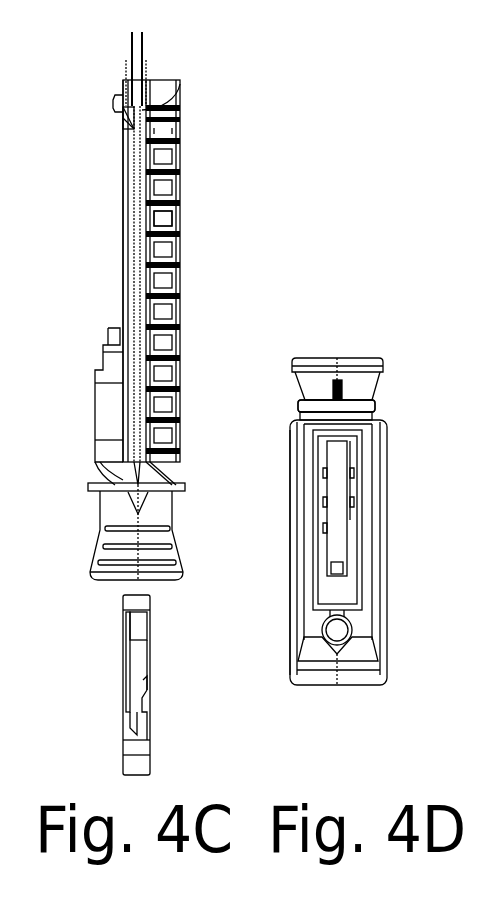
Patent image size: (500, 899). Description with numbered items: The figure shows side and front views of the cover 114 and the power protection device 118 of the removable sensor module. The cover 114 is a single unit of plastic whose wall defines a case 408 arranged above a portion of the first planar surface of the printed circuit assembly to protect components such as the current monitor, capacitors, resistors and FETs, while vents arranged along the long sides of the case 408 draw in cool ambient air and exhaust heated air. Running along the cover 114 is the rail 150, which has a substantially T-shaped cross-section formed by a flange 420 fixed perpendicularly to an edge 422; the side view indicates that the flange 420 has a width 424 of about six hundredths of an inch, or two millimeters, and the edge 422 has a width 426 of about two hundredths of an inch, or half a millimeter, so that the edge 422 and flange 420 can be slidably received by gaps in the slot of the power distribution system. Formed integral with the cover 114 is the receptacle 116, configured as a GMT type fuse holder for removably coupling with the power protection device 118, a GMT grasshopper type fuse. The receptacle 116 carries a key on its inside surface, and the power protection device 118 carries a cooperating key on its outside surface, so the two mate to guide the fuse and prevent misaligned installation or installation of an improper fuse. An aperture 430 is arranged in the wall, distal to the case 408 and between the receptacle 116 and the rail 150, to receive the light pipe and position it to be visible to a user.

In FIG. 4C, the cover 114 is at (197, 288).
In FIG. 4D, the cover 114 is at (382, 350).
In FIG. 4D, the receptacle 116 is at (380, 428).
In FIG. 4C, the power protection device 118 is at (108, 742).
In FIG. 4D, the power protection device 118 is at (340, 557).
In FIG. 4C, the rail 150 is at (125, 228).
In FIG. 4D, the rail 150 is at (334, 688).
In FIG. 4D, the case 408 is at (290, 410).
In FIG. 4C, the flange 420 is at (139, 166).
In FIG. 4C, the edge 422 is at (136, 128).
In FIG. 4C, the width 424 is at (180, 72).
In FIG. 4C, the width 426 is at (98, 45).
In FIG. 4D, the aperture 430 is at (326, 624).